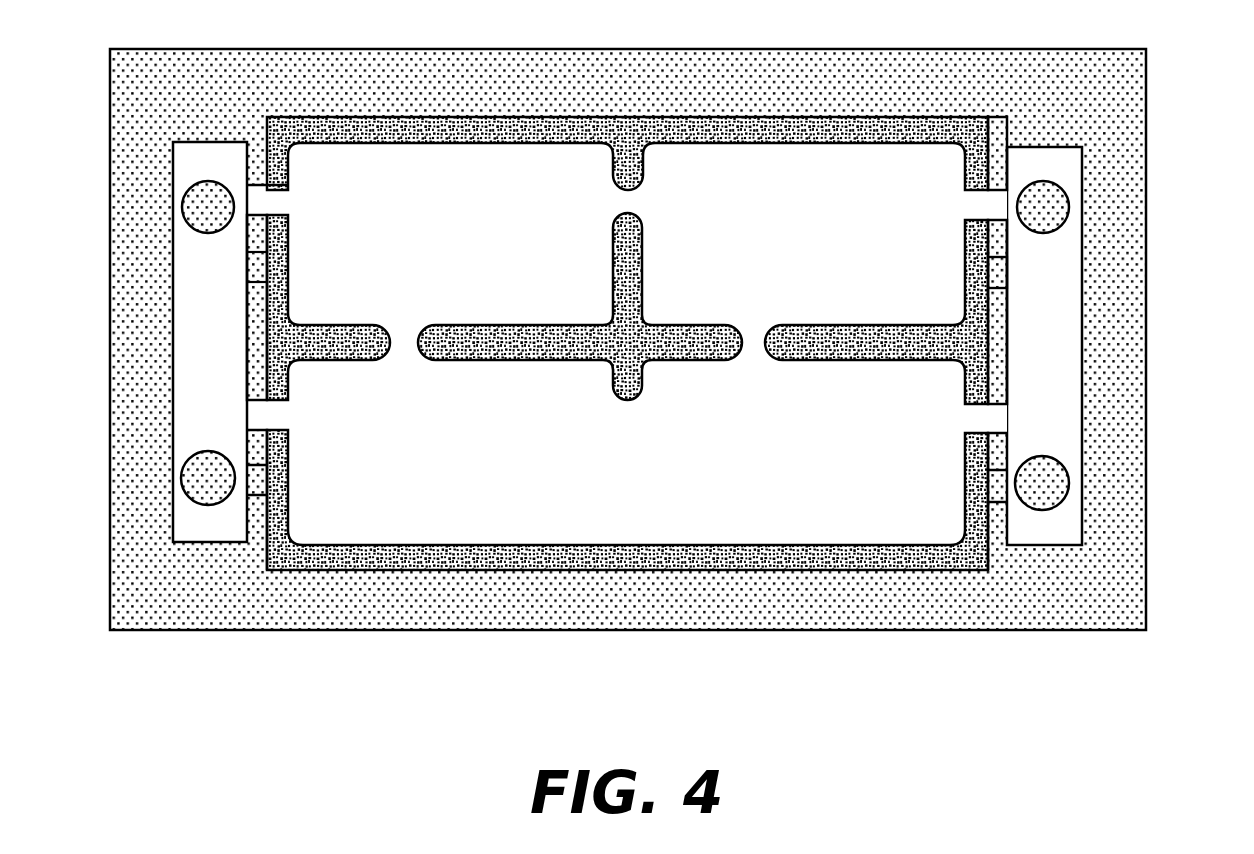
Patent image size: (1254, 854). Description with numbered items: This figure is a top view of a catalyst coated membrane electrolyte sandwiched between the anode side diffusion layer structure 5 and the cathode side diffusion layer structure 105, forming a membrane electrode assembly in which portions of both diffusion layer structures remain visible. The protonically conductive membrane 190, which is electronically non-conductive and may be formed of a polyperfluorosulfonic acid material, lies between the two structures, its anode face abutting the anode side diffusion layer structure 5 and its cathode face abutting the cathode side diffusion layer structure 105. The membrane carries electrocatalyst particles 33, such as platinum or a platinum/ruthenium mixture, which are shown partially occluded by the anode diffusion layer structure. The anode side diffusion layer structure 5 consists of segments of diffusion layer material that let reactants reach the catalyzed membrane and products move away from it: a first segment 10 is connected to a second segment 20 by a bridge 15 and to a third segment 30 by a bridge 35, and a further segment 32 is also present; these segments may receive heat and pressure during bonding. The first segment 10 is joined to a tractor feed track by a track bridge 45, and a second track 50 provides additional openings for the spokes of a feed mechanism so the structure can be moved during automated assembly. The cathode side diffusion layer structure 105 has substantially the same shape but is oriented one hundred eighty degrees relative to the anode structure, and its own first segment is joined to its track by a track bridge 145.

The anode side diffusion layer structure 5 is at (842, 498).
The first segment 10 is at (815, 252).
The bridge 15 is at (750, 345).
The second segment 20 is at (815, 460).
The third segment 30 is at (470, 249).
The segment 32 is at (470, 457).
The electrocatalyst particles 33 is at (426, 118).
The bridge 35 is at (628, 202).
The track bridge 45 is at (993, 205).
The second track 50 is at (230, 348).
The cathode side diffusion layer structure 105 is at (1003, 284).
The track bridge 145 is at (1003, 265).
The protonically conductive membrane 190 is at (567, 592).